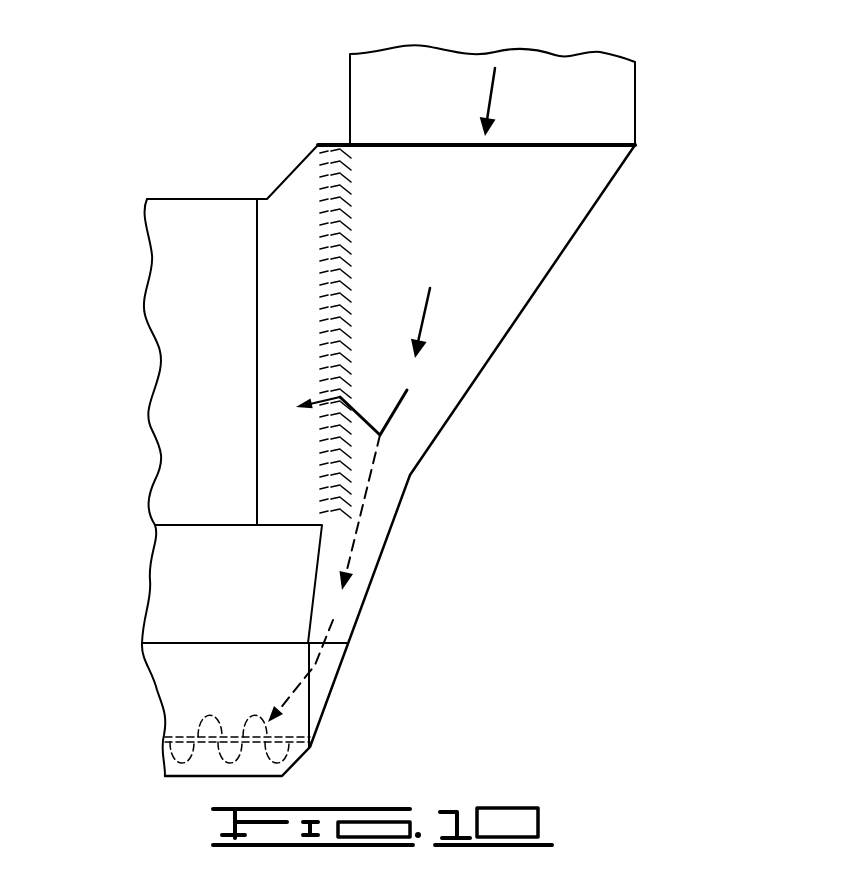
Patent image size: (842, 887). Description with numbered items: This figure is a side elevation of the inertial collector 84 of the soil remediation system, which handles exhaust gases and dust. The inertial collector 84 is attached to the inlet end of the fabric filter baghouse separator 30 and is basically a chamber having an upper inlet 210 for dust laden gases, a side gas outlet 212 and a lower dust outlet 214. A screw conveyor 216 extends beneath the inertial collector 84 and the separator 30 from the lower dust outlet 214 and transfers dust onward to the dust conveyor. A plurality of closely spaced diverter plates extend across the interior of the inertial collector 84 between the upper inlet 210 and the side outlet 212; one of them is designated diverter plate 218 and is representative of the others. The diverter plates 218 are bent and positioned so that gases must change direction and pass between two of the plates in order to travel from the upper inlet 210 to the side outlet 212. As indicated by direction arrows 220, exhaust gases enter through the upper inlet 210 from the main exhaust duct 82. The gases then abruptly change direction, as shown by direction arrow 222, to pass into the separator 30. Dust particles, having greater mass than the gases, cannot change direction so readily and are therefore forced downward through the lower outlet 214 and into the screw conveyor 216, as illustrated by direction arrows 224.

The fabric filter baghouse separator 30 is at (193, 234).
The main exhaust duct 82 is at (600, 83).
The inertial collector 84 is at (540, 366).
The upper inlet 210 is at (572, 145).
The side gas outlet 212 is at (257, 315).
The lower dust outlet 214 is at (333, 643).
The screw conveyor 216 is at (208, 733).
The diverter plate 218 is at (353, 212).
The direction arrows 220 is at (492, 98).
The direction arrow 222 is at (352, 400).
The direction arrows 224 is at (365, 523).